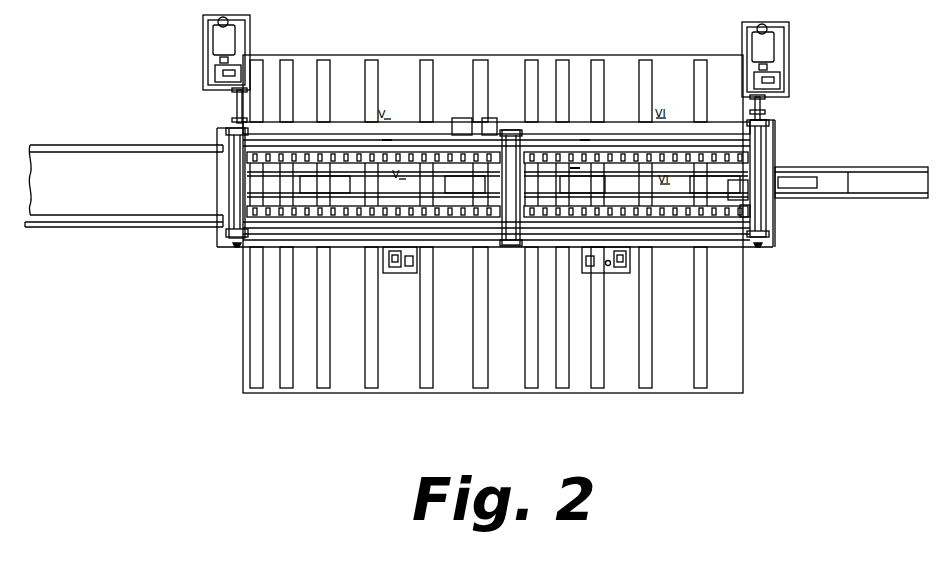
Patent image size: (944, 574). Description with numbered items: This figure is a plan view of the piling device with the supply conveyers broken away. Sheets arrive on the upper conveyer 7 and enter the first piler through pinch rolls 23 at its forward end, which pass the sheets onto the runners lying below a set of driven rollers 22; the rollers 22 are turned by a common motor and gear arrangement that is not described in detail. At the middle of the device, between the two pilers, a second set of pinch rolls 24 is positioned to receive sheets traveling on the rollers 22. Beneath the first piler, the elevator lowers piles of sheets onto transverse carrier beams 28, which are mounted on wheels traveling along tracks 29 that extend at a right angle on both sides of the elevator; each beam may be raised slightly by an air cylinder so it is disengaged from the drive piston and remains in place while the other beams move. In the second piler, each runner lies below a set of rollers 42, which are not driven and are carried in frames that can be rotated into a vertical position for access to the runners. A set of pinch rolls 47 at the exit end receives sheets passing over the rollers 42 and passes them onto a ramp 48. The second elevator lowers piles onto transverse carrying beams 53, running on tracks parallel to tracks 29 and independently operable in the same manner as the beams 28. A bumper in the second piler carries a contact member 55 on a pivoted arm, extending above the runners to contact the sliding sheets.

The upper conveyer 7 is at (83, 160).
The driven rollers 22 is at (352, 218).
The pinch rolls 23 is at (230, 143).
The second set of pinch rolls 24 is at (508, 120).
The transverse carrier beams 28 is at (369, 221).
The tracks 29 is at (287, 63).
The rollers 42 is at (672, 218).
The pinch rolls 47 is at (758, 147).
The ramp 48 is at (890, 167).
The transverse carrying beams 53 is at (642, 374).
The contact member 55 is at (750, 210).